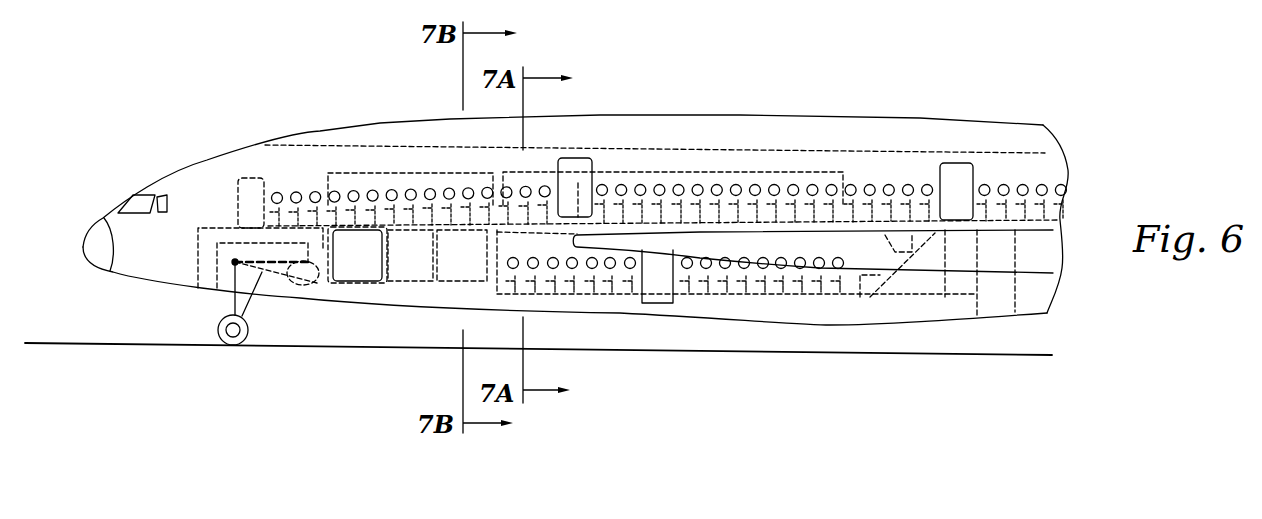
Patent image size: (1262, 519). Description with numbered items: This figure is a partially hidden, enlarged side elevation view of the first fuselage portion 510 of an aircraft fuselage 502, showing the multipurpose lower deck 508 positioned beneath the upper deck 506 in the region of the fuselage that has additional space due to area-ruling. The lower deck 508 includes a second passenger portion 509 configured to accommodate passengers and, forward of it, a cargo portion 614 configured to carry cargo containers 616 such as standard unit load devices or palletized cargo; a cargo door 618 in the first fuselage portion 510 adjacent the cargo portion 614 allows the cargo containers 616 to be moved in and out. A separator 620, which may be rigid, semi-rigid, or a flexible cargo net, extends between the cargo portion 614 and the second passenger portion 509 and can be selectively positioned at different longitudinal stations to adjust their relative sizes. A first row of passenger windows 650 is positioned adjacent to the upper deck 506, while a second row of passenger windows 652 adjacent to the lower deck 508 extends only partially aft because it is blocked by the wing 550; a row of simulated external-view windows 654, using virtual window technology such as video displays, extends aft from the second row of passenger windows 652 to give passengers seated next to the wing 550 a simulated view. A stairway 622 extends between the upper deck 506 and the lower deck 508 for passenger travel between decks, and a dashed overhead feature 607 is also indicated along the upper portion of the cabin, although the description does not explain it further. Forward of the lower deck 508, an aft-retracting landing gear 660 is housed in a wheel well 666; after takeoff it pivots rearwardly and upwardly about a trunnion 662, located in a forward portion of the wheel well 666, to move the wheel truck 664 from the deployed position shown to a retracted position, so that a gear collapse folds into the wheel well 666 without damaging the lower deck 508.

The fuselage 502 is at (98, 223).
The upper deck 506 is at (336, 159).
The multipurpose lower deck 508 is at (292, 287).
The second passenger portion 509 is at (678, 200).
The first fuselage portion 510 is at (380, 123).
The wing 550 is at (657, 253).
The overhead crown area 607 is at (768, 148).
The cargo portion 614 is at (411, 172).
The cargo containers 616 is at (358, 283).
The cargo door 618 is at (344, 284).
The separator 620 is at (498, 235).
The stairway 622 is at (850, 247).
The first row of passenger windows 650 is at (297, 192).
The second row of passenger windows 652 is at (593, 372).
The simulated external-view windows 654 is at (792, 348).
The aft-retracting landing gear 660 is at (230, 306).
The trunnion 662 is at (233, 262).
The wheel truck 664 is at (219, 336).
The wheel well 666 is at (297, 258).